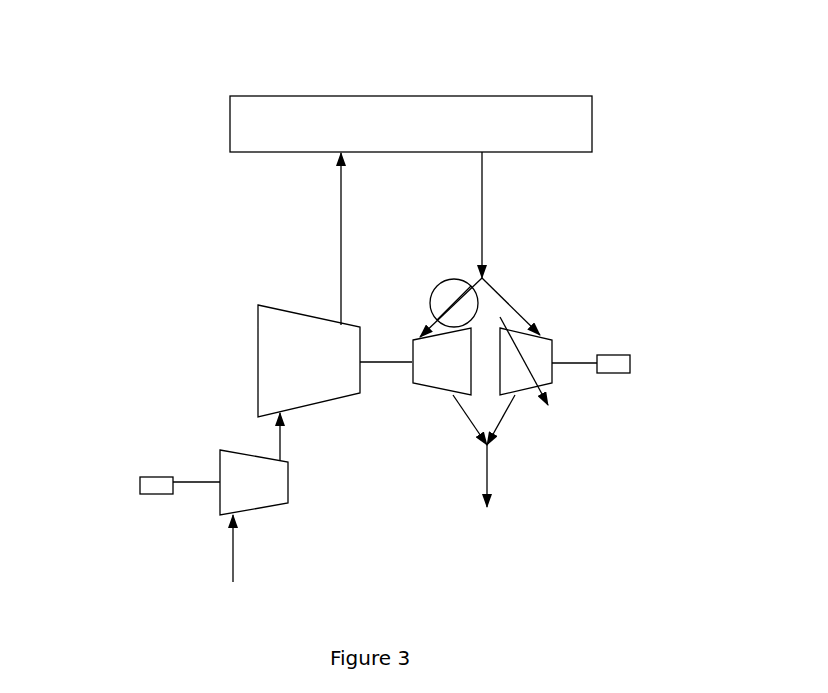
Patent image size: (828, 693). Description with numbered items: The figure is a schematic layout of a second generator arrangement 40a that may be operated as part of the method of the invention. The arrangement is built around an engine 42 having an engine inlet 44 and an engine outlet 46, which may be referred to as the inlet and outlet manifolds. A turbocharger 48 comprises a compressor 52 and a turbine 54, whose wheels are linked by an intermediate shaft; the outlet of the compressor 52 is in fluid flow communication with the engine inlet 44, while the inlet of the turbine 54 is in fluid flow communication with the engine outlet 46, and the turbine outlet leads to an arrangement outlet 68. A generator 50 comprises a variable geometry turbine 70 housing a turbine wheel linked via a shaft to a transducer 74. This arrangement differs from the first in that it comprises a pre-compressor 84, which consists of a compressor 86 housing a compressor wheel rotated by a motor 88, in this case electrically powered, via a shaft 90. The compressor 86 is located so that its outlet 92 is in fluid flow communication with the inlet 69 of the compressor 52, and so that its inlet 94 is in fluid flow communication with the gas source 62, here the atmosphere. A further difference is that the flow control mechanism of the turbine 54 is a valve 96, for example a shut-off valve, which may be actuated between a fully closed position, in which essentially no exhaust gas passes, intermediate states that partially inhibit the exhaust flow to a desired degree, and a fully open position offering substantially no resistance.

The second generator arrangement 40a is at (209, 268).
The engine 42 is at (413, 105).
The engine inlet 44 is at (341, 228).
The engine outlet 46 is at (482, 199).
The turbocharger 48 is at (379, 418).
The generator 50 is at (600, 413).
The compressor 52 is at (258, 360).
The turbine 54 is at (437, 380).
The gas source 62 is at (246, 608).
The arrangement outlet 68 is at (487, 470).
The inlet of the compressor 69 is at (258, 417).
The variable geometry turbine 70 is at (542, 350).
The transducer 74 is at (624, 363).
The pre-compressor 84 is at (186, 529).
The compressor 86 is at (275, 506).
The motor 88 is at (138, 485).
The shaft 90 is at (202, 482).
The outlet of the compressor 92 is at (279, 453).
The inlet of the compressor 94 is at (237, 517).
The valve 96 is at (478, 300).